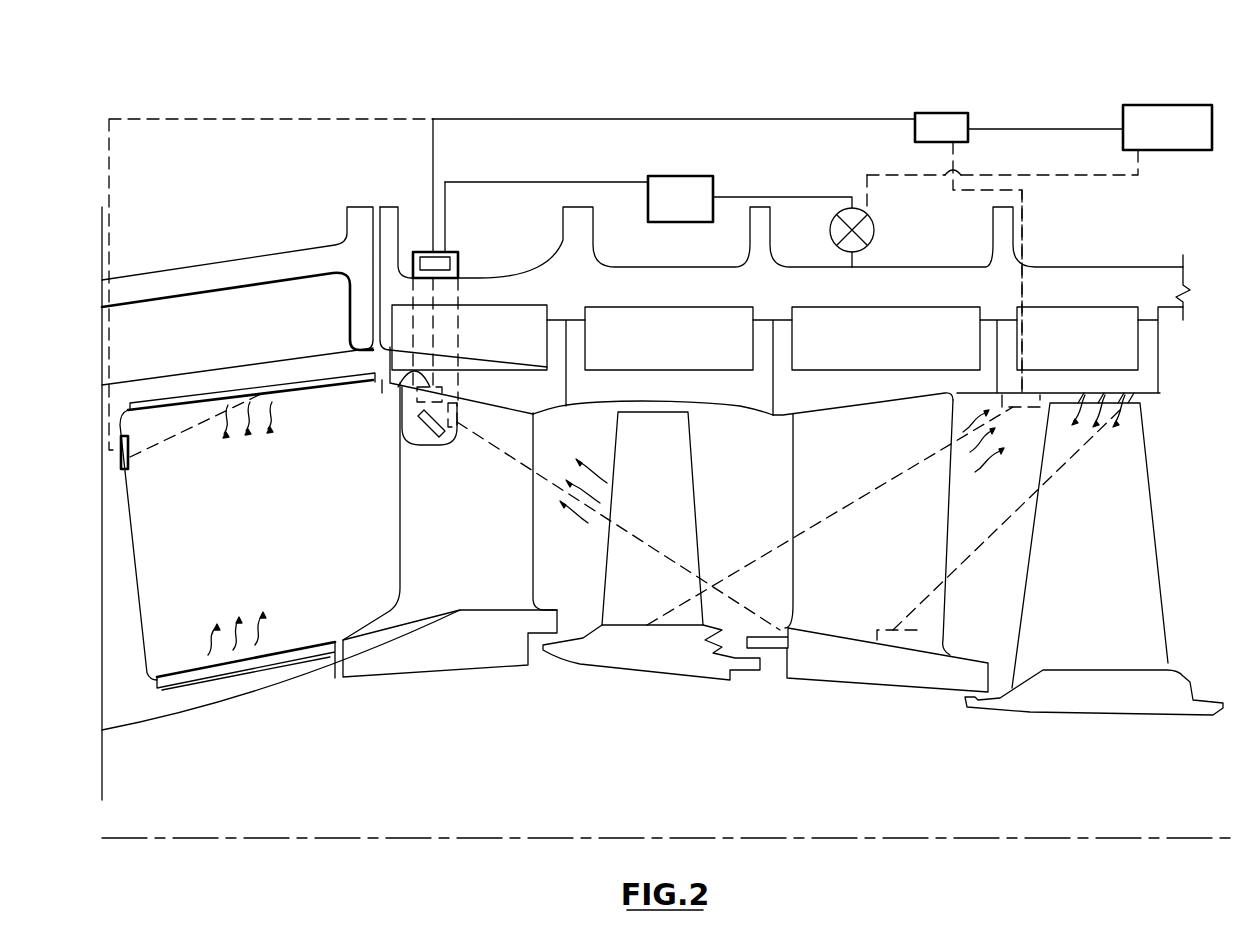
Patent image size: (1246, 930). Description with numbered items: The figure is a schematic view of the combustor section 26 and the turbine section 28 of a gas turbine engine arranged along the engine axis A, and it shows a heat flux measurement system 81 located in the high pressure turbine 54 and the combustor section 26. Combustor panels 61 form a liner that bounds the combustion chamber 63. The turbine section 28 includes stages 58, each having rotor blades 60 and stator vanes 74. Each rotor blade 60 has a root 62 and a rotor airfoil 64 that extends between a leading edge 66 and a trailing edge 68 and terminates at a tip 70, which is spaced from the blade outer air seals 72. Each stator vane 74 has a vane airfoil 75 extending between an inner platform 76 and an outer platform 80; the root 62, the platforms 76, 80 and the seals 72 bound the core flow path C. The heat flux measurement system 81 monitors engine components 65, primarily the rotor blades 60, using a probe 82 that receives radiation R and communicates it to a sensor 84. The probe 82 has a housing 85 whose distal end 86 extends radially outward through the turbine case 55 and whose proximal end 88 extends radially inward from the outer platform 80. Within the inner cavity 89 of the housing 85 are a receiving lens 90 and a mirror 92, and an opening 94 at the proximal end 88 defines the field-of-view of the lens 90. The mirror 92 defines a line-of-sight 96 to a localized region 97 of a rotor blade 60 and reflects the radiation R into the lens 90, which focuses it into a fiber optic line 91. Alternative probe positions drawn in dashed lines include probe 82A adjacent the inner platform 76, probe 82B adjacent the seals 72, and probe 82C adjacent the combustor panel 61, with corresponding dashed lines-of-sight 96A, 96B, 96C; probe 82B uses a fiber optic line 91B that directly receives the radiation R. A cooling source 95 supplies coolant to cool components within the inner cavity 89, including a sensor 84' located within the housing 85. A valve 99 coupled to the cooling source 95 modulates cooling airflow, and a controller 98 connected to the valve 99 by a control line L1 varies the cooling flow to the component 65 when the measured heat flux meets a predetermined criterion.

The heat flux measurement system 81 is at (376, 54).
The sensor 84 is at (1005, 109).
The controller 98 is at (1157, 150).
The control line L1 is at (1100, 175).
The fiber optic line 91 is at (527, 119).
The distal end 86 is at (428, 250).
The probe 82 is at (462, 240).
The sensor 84' is at (468, 260).
The cooling source 95 is at (672, 222).
The valve 99 is at (875, 230).
The fiber optic line 91B is at (1022, 240).
The turbine case 55 is at (935, 262).
The inner cavity 89 is at (448, 333).
The blade outer air seals 72 is at (667, 399).
The outer platform 80 is at (910, 399).
The probe 82B is at (1045, 395).
The proximal end 88 is at (437, 442).
The receiving lens 90 is at (412, 402).
The housing 85 is at (412, 407).
The mirror 92 is at (420, 435).
The opening 94 is at (458, 420).
The combustion chamber 63 is at (205, 547).
The probe 82C is at (128, 467).
The leakage path 96C is at (180, 438).
The combustor panels 61 is at (210, 393).
The engine components 65 is at (265, 387).
The vane airfoil 75 is at (475, 511).
The stator vanes 74 is at (396, 490).
The inner platform 76 is at (460, 654).
The combustor section 26 is at (295, 736).
The turbine section 28 is at (392, 787).
The high pressure turbine 54 is at (437, 726).
The rotor airfoil 64 is at (668, 531).
The root 62 is at (662, 662).
The tip 70 is at (668, 408).
The localized region 97 is at (631, 496).
The rotor blades 60 is at (725, 478).
The trailing edge 68 is at (703, 565).
The leading edge 66 is at (607, 575).
The core flow path C is at (568, 542).
The line-of-sight 96 is at (753, 617).
The leakage path 96B is at (877, 490).
The leakage path 96A is at (1013, 520).
The probe 82A is at (877, 630).
The radiation R is at (273, 405).
The stages 58 is at (547, 718).
The engine axis A is at (1218, 838).